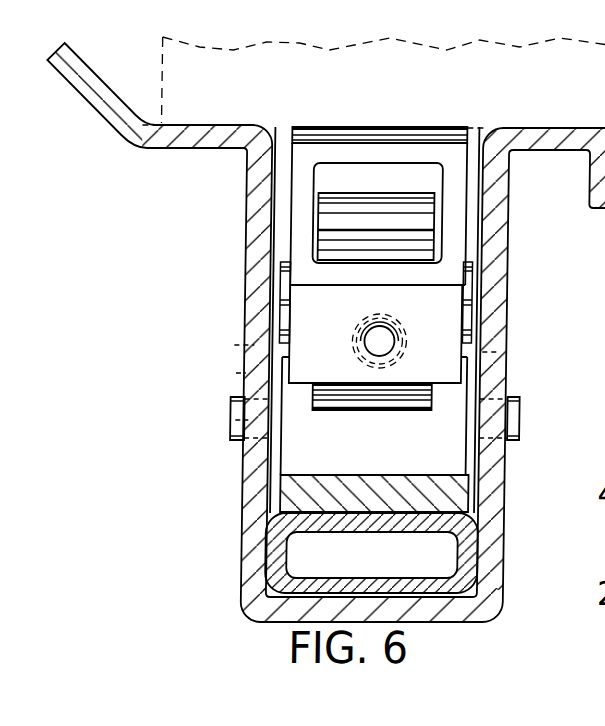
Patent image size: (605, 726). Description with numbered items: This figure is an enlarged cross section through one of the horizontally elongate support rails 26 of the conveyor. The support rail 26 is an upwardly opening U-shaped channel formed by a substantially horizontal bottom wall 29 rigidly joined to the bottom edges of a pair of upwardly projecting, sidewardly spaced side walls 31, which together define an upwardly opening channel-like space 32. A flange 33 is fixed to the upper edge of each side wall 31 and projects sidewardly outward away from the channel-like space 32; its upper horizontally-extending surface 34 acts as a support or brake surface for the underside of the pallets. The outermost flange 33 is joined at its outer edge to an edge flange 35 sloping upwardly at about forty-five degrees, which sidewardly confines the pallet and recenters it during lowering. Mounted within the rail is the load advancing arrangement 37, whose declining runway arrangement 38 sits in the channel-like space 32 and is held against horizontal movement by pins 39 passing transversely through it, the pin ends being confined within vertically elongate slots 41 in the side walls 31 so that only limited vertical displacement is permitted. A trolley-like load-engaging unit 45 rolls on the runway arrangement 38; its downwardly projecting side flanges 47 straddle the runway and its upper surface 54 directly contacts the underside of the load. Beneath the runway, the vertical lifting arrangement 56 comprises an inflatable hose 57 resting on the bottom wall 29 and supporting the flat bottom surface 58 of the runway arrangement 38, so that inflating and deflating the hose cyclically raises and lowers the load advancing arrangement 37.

The support rail 26 is at (226, 337).
The bottom wall 29 is at (423, 613).
The side wall 31 is at (250, 286).
The channel-like space 32 is at (278, 150).
The flange 33 is at (197, 140).
The upper horizontally-extending surface 34 is at (202, 125).
The edge flange 35 is at (87, 87).
The load advancing arrangement 37 is at (272, 505).
The runway arrangement 38 is at (462, 493).
The pin 39 is at (232, 420).
The slot 41 is at (262, 368).
The load-engaging unit 45 is at (428, 118).
The side flange 47 is at (299, 212).
The upper surface 54 is at (351, 127).
The vertical lifting arrangement 56 is at (497, 586).
The inflatable hose 57 is at (282, 557).
The flat bottom surface 58 is at (420, 515).